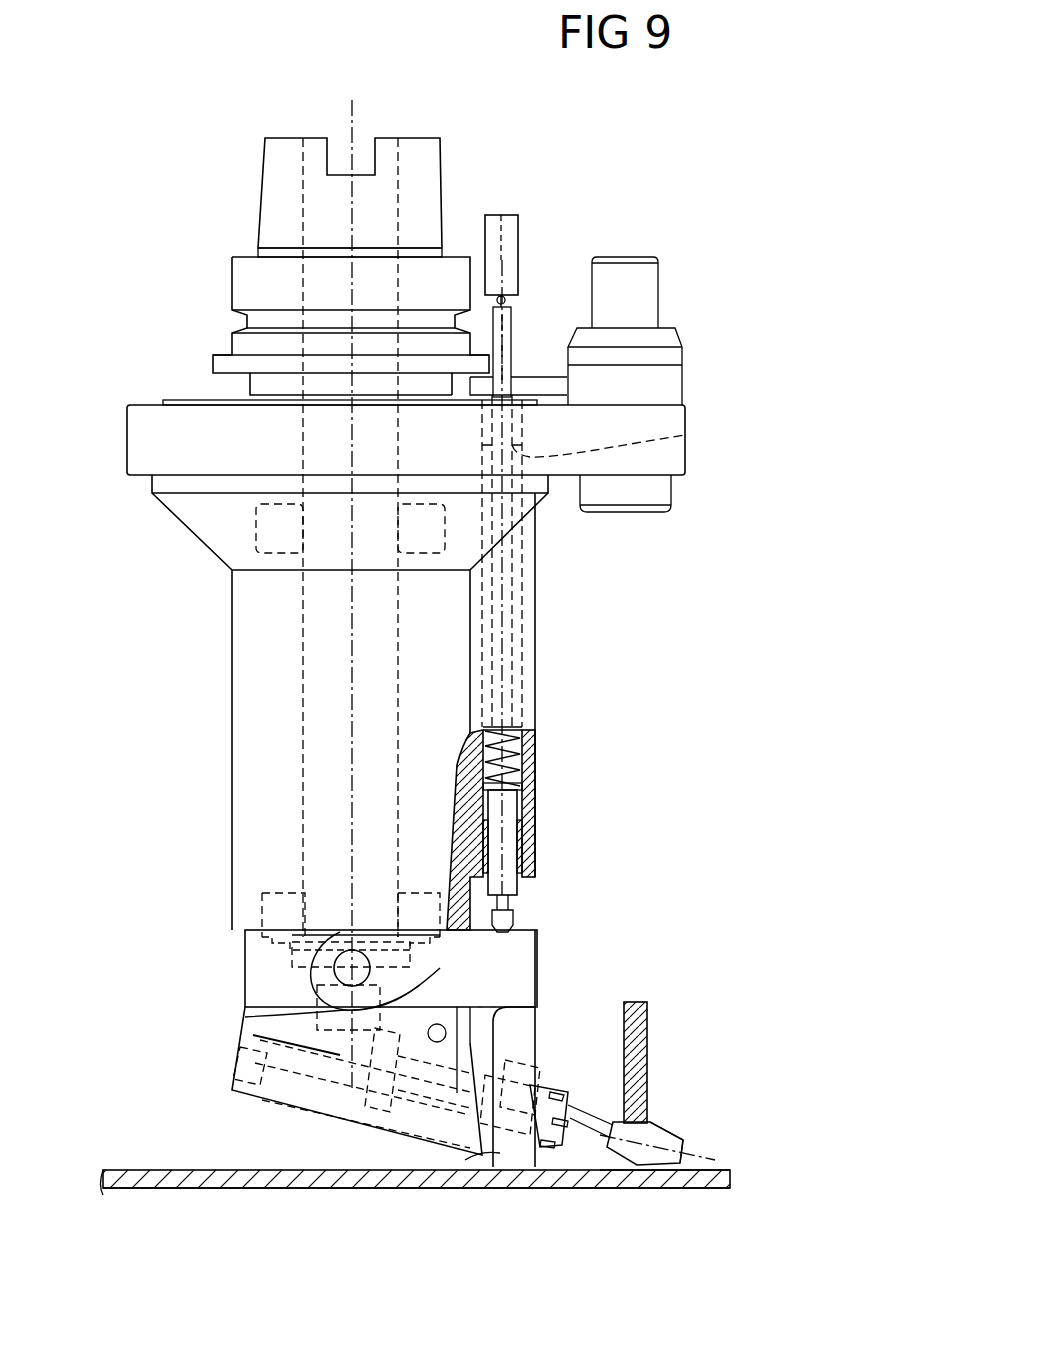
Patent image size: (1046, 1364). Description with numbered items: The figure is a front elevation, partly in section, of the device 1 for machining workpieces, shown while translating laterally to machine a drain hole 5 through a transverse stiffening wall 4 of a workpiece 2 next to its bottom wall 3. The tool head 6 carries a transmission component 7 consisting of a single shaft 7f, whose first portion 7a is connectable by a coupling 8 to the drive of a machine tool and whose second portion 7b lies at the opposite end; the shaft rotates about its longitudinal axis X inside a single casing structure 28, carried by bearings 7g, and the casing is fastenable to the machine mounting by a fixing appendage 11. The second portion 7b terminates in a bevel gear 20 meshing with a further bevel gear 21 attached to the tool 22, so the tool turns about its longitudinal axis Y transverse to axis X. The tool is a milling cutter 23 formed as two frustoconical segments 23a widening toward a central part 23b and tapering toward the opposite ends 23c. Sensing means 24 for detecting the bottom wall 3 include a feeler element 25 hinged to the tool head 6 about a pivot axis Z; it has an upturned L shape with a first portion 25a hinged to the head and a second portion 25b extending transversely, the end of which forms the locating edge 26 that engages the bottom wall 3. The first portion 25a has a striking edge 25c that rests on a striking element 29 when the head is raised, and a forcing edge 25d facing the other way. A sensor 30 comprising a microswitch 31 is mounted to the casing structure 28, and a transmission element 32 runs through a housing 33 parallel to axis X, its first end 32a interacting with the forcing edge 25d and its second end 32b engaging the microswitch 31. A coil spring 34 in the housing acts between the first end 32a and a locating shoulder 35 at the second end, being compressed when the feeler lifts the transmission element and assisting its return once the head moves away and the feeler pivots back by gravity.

The device for machining workpieces 1 is at (710, 586).
The workpiece 2 is at (188, 1192).
The bottom wall 3 is at (260, 1180).
The transverse stiffening wall 4 is at (640, 1035).
The drain hole 5 is at (618, 1167).
The tool head 6 is at (148, 403).
The transmission component 7 is at (302, 676).
The first portion 7a is at (325, 205).
The second portion 7b is at (333, 903).
The shaft 7f is at (325, 722).
The bearings 7g is at (275, 518).
The coupling 8 is at (283, 153).
The fixing appendage 11 is at (640, 283).
The bevel gear 20 is at (300, 1090).
The further bevel gear 21 is at (360, 1100).
The tool 22 is at (565, 1085).
The milling cutter 23 is at (660, 1165).
The frustoconical segments 23a is at (678, 1140).
The central part 23b is at (675, 1132).
The opposite ends 23c is at (712, 1168).
The sensing means 24 is at (536, 208).
The feeler element 25 is at (517, 978).
The first portion 25a is at (290, 1017).
The second portion 25b is at (485, 1012).
The striking edge 25c is at (415, 1010).
The forcing edge 25d is at (512, 930).
The locating edge 26 is at (500, 1140).
The casing structure 28 is at (268, 636).
The striking element 29 is at (437, 1043).
The sensor 30 is at (520, 241).
The microswitch 31 is at (501, 226).
The transmission element 32 is at (530, 775).
The first end 32a is at (507, 858).
The second end 32b is at (505, 348).
The housing 33 is at (520, 748).
The coil spring 34 is at (525, 732).
The locating shoulder 35 is at (685, 435).
The longitudinal axis X is at (355, 112).
The longitudinal axis Y is at (725, 1152).
The pivot axis Z is at (334, 980).